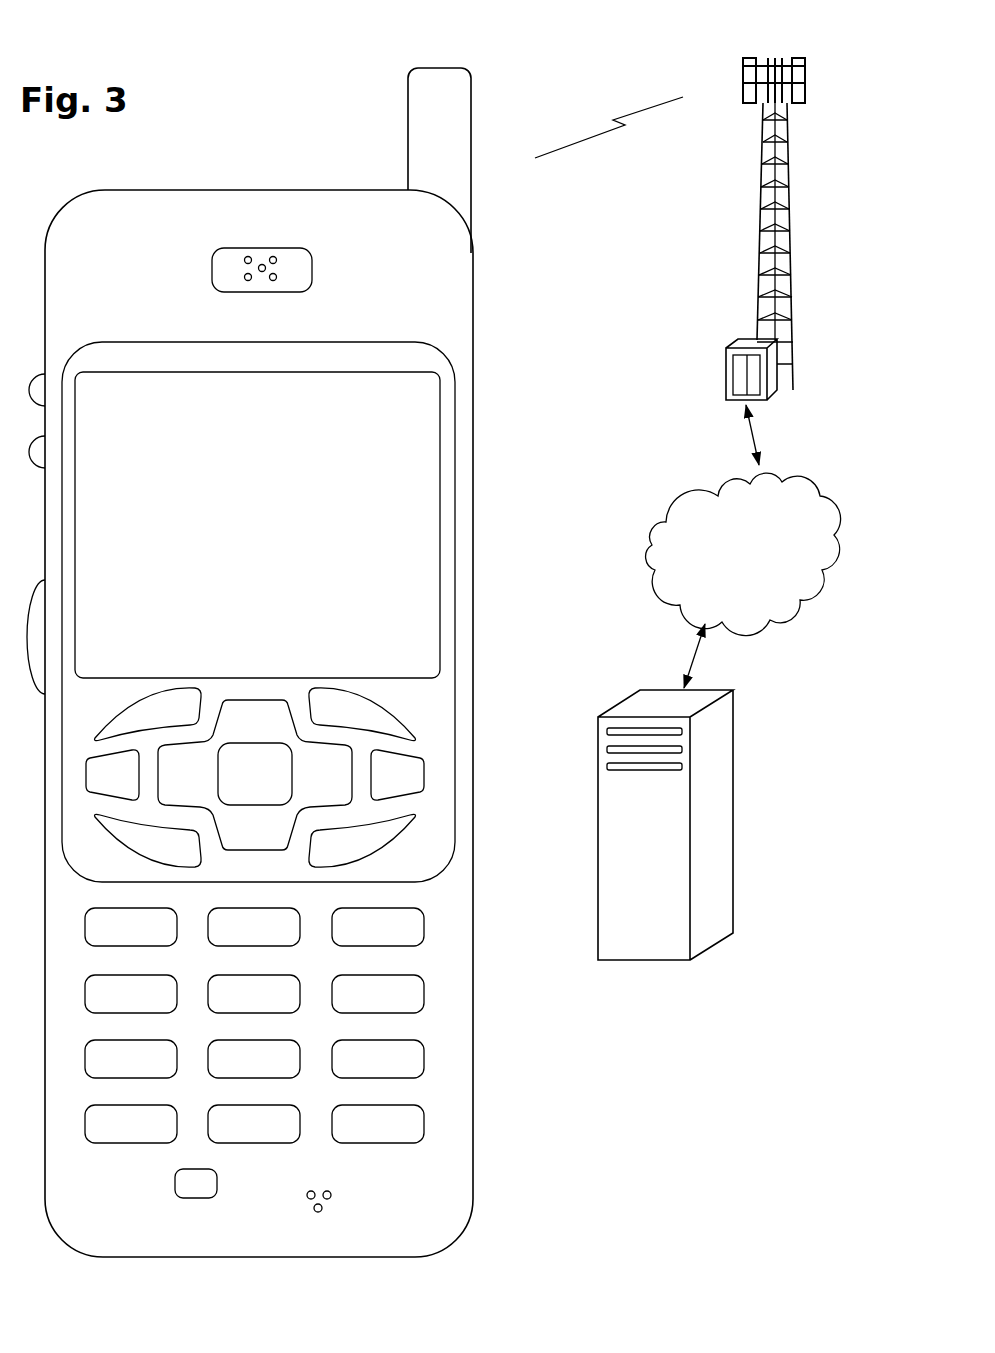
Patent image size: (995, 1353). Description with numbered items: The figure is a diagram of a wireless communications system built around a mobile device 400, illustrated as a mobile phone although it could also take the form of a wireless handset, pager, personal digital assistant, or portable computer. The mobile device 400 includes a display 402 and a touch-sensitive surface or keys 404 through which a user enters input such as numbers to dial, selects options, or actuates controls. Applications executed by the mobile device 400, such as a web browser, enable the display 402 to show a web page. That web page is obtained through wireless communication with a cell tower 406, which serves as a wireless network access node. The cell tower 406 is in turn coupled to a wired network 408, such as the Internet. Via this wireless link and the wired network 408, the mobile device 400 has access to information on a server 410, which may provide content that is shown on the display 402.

The mobile device 400 is at (88, 1251).
The display 402 is at (456, 380).
The keys 404 is at (484, 695).
The cell tower 406 is at (763, 243).
The wired network 408 is at (662, 597).
The server 410 is at (645, 962).